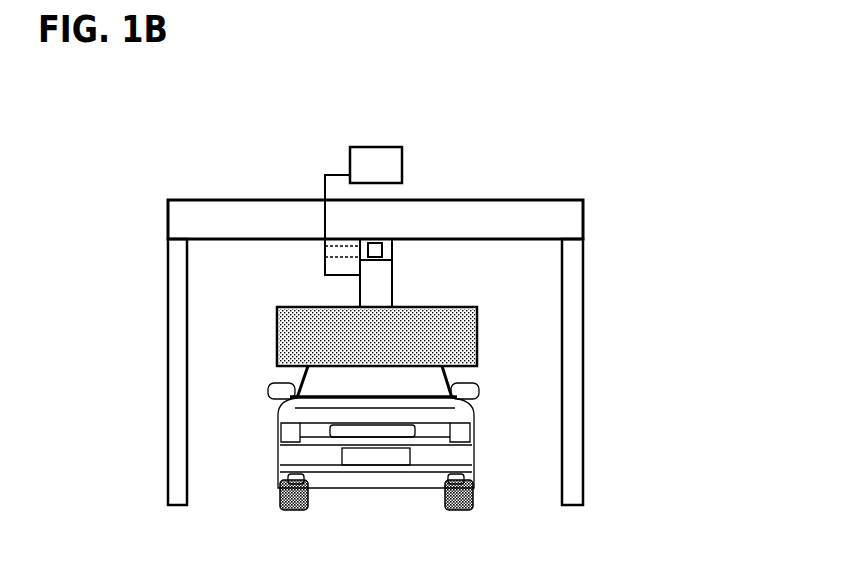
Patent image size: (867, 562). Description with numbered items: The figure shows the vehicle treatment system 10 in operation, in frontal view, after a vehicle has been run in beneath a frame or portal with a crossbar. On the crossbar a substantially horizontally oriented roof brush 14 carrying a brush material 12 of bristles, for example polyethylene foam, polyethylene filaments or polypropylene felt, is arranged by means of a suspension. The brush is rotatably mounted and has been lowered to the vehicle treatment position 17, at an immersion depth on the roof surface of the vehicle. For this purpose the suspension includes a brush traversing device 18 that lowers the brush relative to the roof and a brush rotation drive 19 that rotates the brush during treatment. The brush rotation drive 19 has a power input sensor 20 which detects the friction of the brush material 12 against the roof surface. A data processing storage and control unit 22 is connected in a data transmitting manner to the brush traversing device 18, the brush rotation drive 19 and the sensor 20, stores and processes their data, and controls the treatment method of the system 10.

The vehicle treatment system 10 is at (132, 124).
The brush material 12 is at (427, 345).
The roof brush 14 is at (427, 307).
The vehicle treatment position 17 is at (498, 336).
The brush traversing device 18 is at (360, 283).
The brush rotation drive 19 is at (392, 248).
The power input sensor 20 is at (327, 258).
The data processing storage and control unit 22 is at (350, 150).